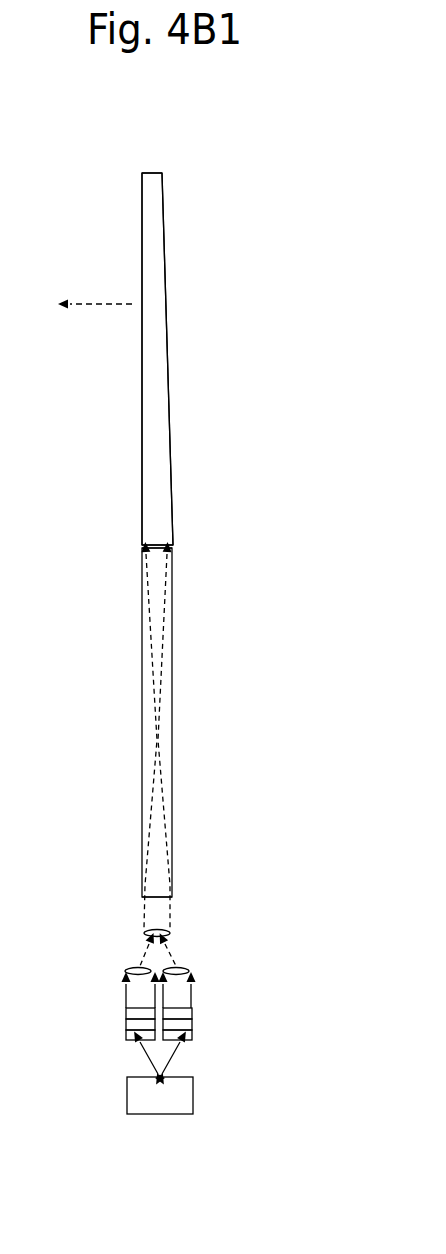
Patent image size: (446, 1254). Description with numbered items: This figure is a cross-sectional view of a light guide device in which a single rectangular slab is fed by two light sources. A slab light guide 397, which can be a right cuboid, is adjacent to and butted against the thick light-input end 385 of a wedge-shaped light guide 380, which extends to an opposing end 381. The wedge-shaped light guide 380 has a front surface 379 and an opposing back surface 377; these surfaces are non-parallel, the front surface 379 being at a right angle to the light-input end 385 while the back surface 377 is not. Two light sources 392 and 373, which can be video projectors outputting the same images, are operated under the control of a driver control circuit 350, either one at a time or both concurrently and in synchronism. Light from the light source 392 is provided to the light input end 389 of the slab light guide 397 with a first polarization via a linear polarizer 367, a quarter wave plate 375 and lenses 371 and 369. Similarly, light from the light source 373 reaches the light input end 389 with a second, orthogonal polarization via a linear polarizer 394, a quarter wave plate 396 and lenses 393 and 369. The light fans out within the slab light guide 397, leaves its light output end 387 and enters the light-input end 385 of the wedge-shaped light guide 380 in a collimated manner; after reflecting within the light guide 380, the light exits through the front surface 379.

The driver control circuit 350 is at (160, 1078).
The linear polarizer 367 is at (126, 1025).
The lens 369 is at (172, 935).
The lens 371 is at (124, 971).
The light source 373 is at (192, 1038).
The quarter wave plate 375 is at (126, 1013).
The back surface 377 is at (168, 366).
The front surface 379 is at (142, 366).
The wedge-shaped light guide 380 is at (133, 437).
The opposing end 381 is at (162, 173).
The light-input end 385 is at (143, 544).
The light output end 387 is at (158, 550).
The light input end 389 is at (147, 898).
The light source 392 is at (126, 1038).
The lens 393 is at (190, 971).
The linear polarizer 394 is at (192, 1025).
The quarter wave plate 396 is at (192, 1013).
The slab light guide 397 is at (142, 781).